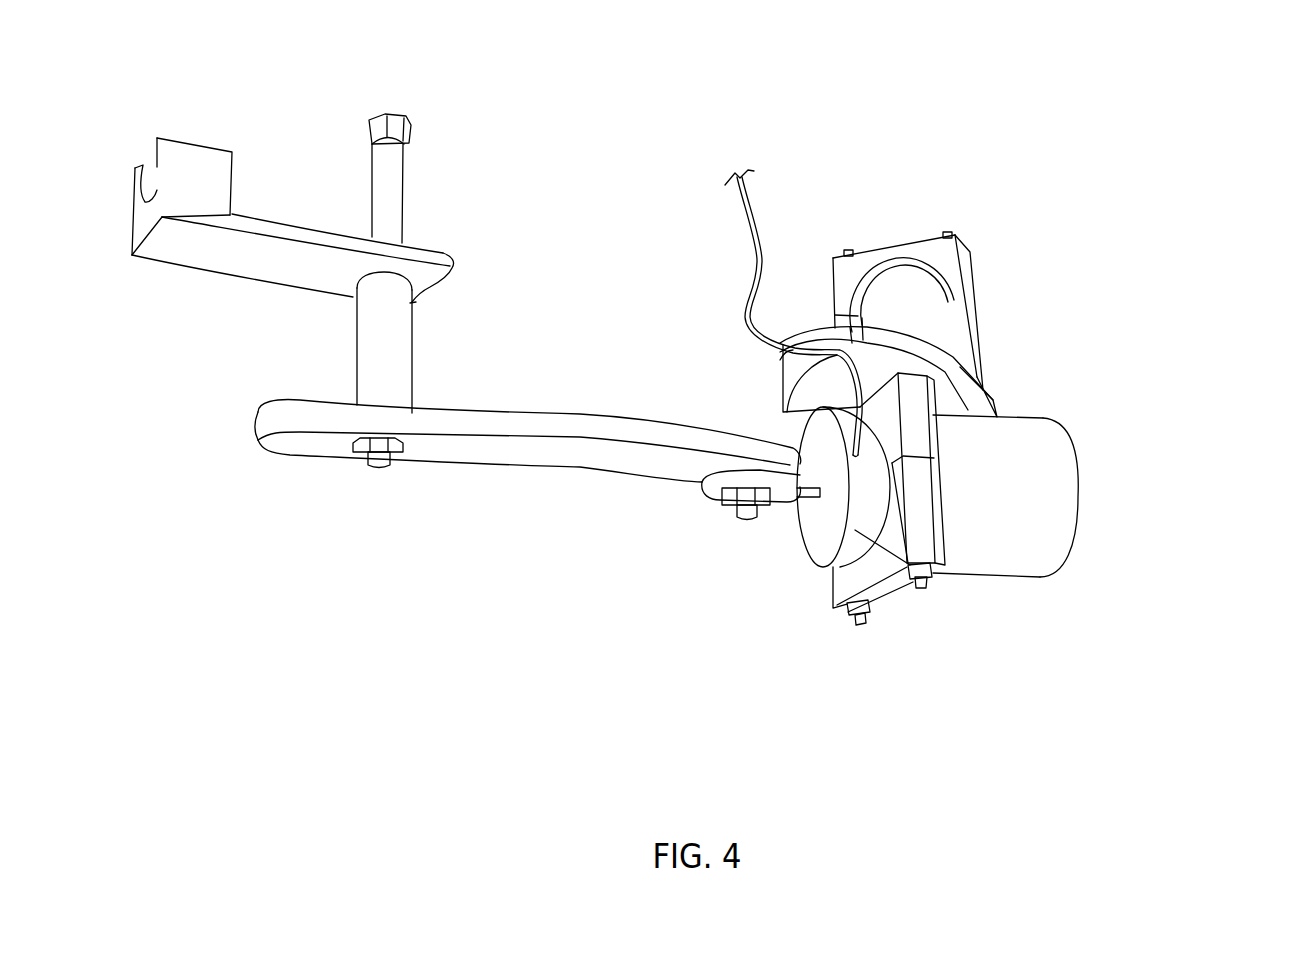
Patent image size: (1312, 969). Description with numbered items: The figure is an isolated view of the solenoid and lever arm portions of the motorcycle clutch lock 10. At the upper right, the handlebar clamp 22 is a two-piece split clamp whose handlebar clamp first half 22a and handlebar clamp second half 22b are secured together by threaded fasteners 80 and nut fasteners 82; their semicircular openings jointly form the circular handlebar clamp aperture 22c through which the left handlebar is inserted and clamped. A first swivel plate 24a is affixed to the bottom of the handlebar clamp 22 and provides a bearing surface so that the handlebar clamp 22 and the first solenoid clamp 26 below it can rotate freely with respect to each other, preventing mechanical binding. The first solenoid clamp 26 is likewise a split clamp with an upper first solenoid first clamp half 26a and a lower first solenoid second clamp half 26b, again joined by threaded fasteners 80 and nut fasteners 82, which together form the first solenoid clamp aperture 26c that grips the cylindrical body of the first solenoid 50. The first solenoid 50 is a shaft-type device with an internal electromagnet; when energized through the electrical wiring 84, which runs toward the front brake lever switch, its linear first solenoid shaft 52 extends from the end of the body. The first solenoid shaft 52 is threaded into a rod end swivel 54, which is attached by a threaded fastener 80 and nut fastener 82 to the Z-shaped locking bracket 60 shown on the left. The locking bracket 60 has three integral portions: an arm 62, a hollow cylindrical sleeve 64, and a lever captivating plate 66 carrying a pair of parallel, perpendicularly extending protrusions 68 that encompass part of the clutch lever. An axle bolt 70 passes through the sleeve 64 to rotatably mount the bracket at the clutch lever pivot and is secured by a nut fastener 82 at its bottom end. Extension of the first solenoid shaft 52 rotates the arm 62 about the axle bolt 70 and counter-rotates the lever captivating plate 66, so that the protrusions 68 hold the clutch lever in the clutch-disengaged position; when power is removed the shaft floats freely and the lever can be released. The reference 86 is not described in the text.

The motorcycle clutch lock 10 is at (1083, 307).
The handlebar clamp 22 is at (978, 344).
The handlebar clamp first half 22a is at (970, 253).
The handlebar clamp second half 22b is at (975, 323).
The handlebar clamp aperture 22c is at (862, 292).
The first swivel plate 24a is at (993, 400).
The first solenoid clamp 26 is at (833, 581).
The first solenoid first clamp half 26a is at (912, 435).
The first solenoid second clamp half 26b is at (928, 510).
The first solenoid clamp aperture 26c is at (850, 583).
The first solenoid 50 is at (1010, 567).
The first solenoid shaft 52 is at (808, 495).
The rod end swivel 54 is at (777, 502).
The locking bracket 60 is at (517, 465).
The arm 62 is at (507, 418).
The sleeve 64 is at (393, 348).
The lever captivating plate 66 is at (448, 262).
The protrusions 68 is at (182, 140).
The axle bolt 70 is at (388, 176).
The threaded fastener 80 is at (743, 510).
The nut fastener 82 is at (360, 447).
The electrical wiring 84 is at (752, 328).
The cable end to front brake lever switch 86 is at (716, 186).